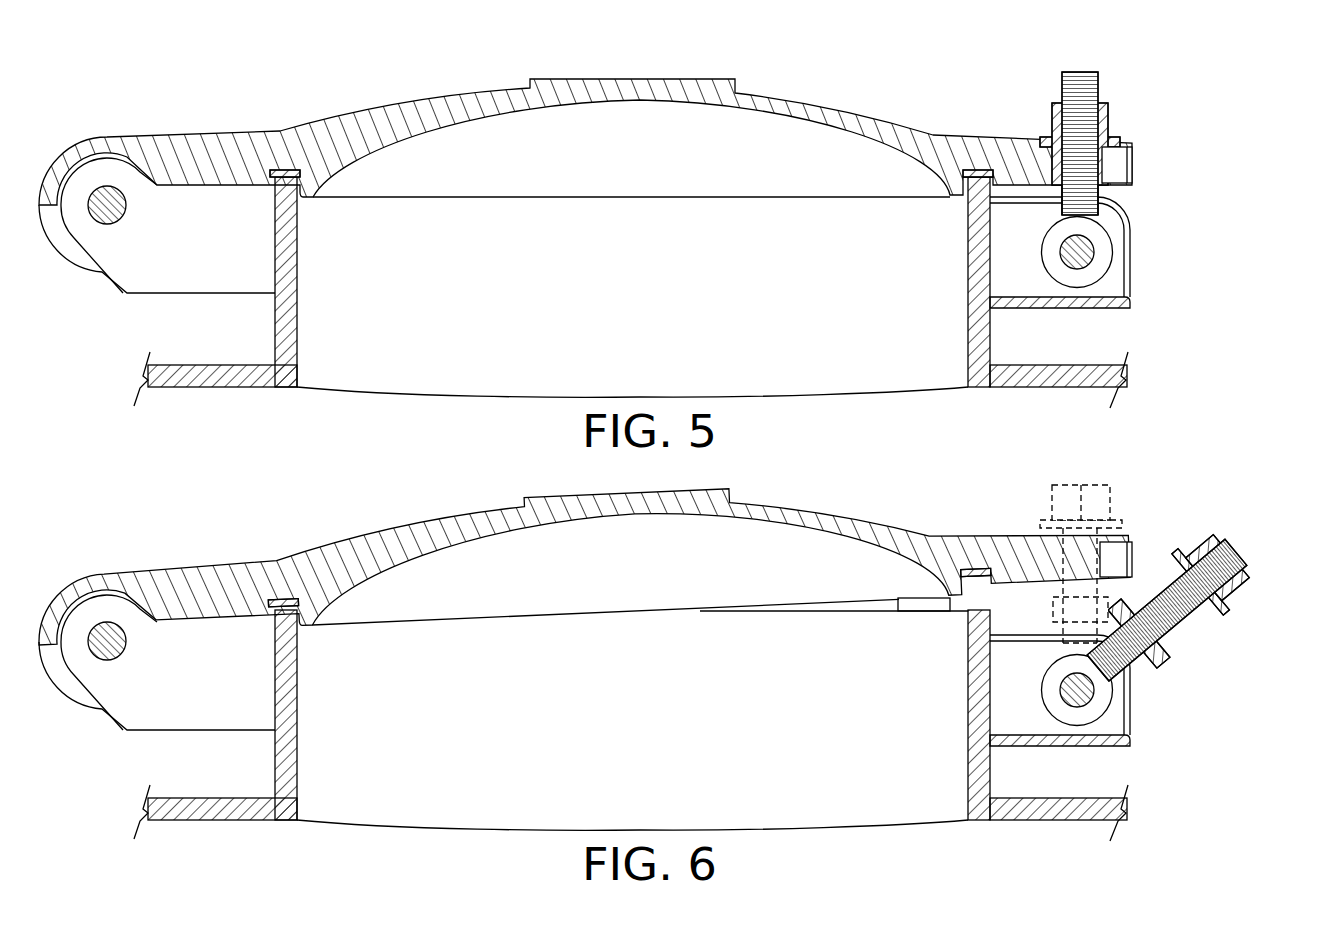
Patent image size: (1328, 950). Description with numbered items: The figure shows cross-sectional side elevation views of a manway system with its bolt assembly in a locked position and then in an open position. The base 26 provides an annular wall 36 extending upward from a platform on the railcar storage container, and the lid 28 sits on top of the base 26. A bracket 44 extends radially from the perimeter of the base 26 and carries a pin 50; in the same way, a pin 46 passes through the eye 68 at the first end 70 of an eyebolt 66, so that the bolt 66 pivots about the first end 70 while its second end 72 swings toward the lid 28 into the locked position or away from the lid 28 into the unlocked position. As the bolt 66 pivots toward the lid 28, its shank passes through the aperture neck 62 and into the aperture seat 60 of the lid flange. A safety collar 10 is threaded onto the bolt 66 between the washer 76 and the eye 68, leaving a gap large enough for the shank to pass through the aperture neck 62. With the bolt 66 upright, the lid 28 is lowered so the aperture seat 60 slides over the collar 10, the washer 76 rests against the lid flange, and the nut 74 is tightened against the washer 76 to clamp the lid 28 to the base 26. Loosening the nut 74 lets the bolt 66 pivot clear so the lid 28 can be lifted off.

In FIG. 5, the safety collar 10 is at (1100, 192).
In FIG. 6, the safety collar 10 is at (1143, 657).
In FIG. 5, the base 26 is at (360, 378).
In FIG. 6, the base 26 is at (360, 811).
In FIG. 5, the lid 28 is at (352, 122).
In FIG. 6, the lid 28 is at (352, 552).
In FIG. 5, the annular wall 36 is at (278, 350).
In FIG. 6, the annular wall 36 is at (278, 782).
In FIG. 5, the bracket 44 is at (1113, 308).
In FIG. 6, the bracket 44 is at (1060, 690).
In FIG. 5, the pin 46 is at (1098, 254).
In FIG. 5, the pin 50 is at (1100, 270).
In FIG. 6, the pin 50 is at (1092, 690).
In FIG. 5, the aperture seat 60 is at (1052, 150).
In FIG. 6, the aperture seat 60 is at (1052, 545).
In FIG. 5, the aperture neck 62 is at (1134, 164).
In FIG. 6, the aperture neck 62 is at (1132, 552).
In FIG. 5, the eyebolt 66 is at (1103, 204).
In FIG. 6, the eyebolt 66 is at (1187, 612).
In FIG. 6, the eye 68 is at (1090, 702).
In FIG. 5, the first end 70 is at (1097, 278).
In FIG. 6, the first end 70 is at (1097, 717).
In FIG. 5, the second end 72 is at (1084, 72).
In FIG. 6, the second end 72 is at (1238, 540).
In FIG. 5, the nut 74 is at (1110, 120).
In FIG. 6, the nut 74 is at (1115, 497).
In FIG. 5, the washer 76 is at (1120, 142).
In FIG. 6, the washer 76 is at (1125, 524).